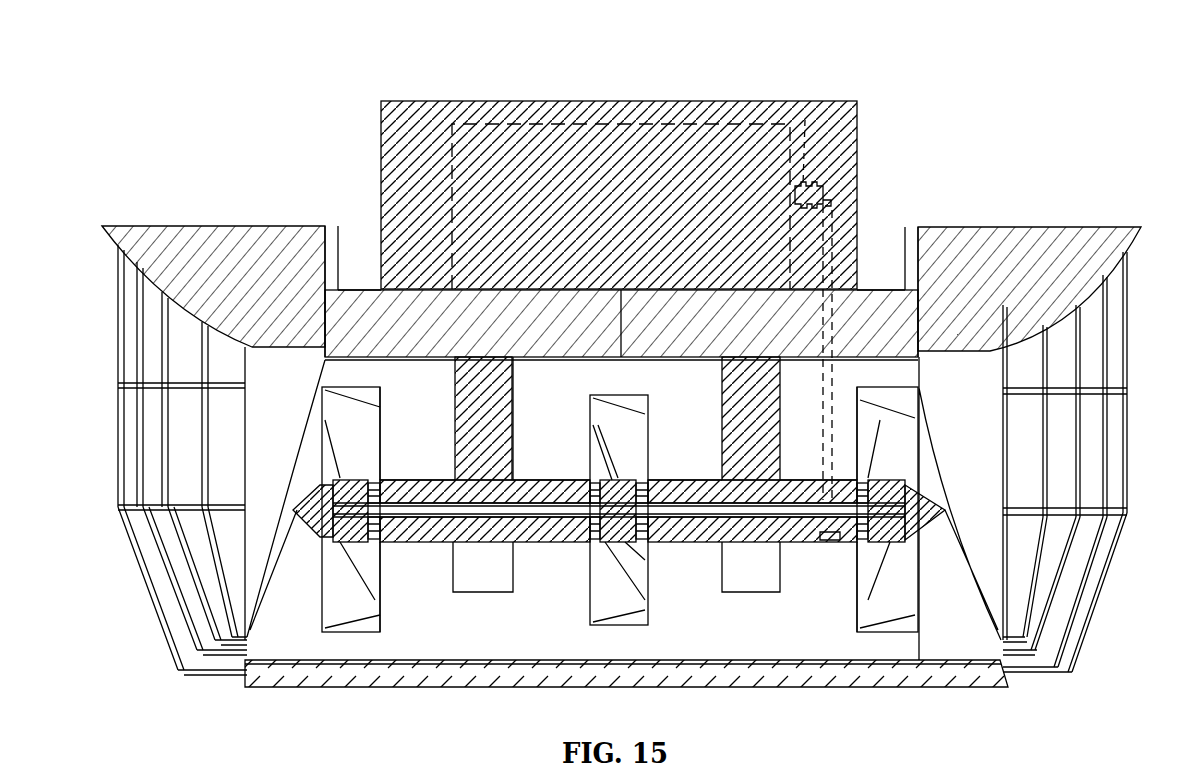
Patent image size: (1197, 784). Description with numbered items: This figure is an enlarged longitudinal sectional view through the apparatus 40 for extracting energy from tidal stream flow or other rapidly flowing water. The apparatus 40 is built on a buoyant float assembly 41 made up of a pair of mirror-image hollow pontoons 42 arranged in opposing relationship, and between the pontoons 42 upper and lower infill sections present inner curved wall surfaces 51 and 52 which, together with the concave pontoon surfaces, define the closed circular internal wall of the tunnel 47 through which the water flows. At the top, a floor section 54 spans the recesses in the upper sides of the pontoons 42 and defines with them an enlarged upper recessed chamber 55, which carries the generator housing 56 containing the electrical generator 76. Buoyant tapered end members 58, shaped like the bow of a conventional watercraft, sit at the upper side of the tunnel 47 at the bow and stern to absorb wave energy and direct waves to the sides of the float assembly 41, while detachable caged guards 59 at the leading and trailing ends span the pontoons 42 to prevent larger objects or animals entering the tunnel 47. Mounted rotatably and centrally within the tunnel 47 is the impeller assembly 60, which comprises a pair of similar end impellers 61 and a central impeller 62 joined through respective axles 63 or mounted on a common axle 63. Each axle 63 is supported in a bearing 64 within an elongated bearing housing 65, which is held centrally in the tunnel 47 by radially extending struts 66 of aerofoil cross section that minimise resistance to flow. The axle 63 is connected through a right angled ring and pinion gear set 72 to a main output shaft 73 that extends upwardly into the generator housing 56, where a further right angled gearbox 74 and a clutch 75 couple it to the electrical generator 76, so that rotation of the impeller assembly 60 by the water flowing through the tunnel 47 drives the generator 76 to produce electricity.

The apparatus 40 is at (972, 80).
The float assembly 41 is at (246, 620).
The hollow pontoons 42 is at (1000, 565).
The tunnel 47 is at (512, 650).
The inner curved wall surface 51 is at (380, 650).
The inner curved wall surface 52 is at (325, 358).
The floor section 54 is at (370, 287).
The upper recessed chamber 55 is at (336, 229).
The generator housing 56 is at (557, 103).
The tapered end members 58 is at (160, 226).
The detachable guards 59 is at (102, 360).
The impeller assembly 60 is at (495, 548).
The end impellers 61 is at (345, 642).
The central impeller 62 is at (655, 632).
The axle 63 is at (570, 512).
The bearing 64 is at (708, 545).
The bearing housing 65 is at (430, 535).
The struts 66 is at (470, 378).
The ring and pinion gear set 72 is at (830, 538).
The main output shaft 73 is at (838, 290).
The right angled gearbox 74 is at (835, 196).
The clutch 75 is at (805, 118).
The electrical generator 76 is at (682, 125).